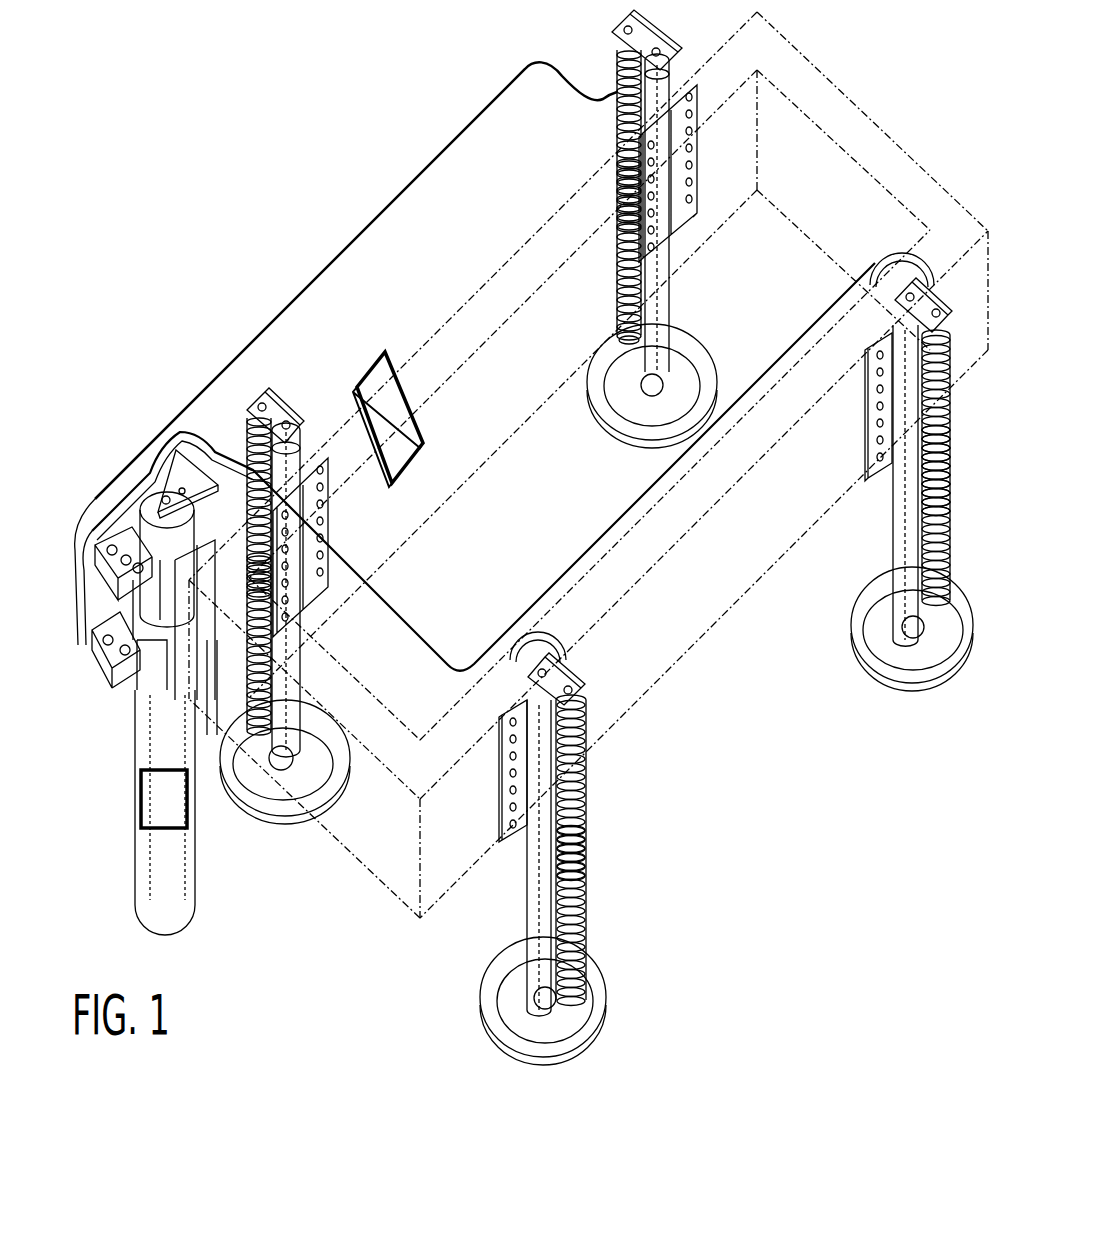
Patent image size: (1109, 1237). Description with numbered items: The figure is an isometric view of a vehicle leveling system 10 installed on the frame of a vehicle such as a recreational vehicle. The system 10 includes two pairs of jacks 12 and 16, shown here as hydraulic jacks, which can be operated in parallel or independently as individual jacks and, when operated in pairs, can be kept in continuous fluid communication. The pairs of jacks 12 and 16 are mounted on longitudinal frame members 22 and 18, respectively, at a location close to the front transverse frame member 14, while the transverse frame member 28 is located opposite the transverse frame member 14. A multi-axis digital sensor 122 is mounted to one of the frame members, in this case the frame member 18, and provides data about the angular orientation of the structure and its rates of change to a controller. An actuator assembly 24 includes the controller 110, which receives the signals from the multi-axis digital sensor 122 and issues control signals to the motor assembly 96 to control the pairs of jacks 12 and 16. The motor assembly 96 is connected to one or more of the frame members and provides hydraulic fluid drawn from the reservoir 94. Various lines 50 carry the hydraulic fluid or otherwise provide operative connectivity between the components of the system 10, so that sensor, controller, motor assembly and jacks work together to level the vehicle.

The system 10 is at (437, 110).
The pair of jacks 12 is at (243, 435).
The front transverse frame member 14 is at (385, 693).
The pair of jacks 16 is at (672, 42).
The longitudinal frame member 18 is at (420, 348).
The longitudinal frame member 22 is at (668, 671).
The actuator assembly 24 is at (127, 741).
The transverse frame member 28 is at (838, 89).
The lines 50 is at (408, 745).
The reservoir 94 is at (138, 878).
The motor assembly 96 is at (157, 483).
The controller 110 is at (164, 799).
The multi-axis digital sensor 122 is at (388, 419).